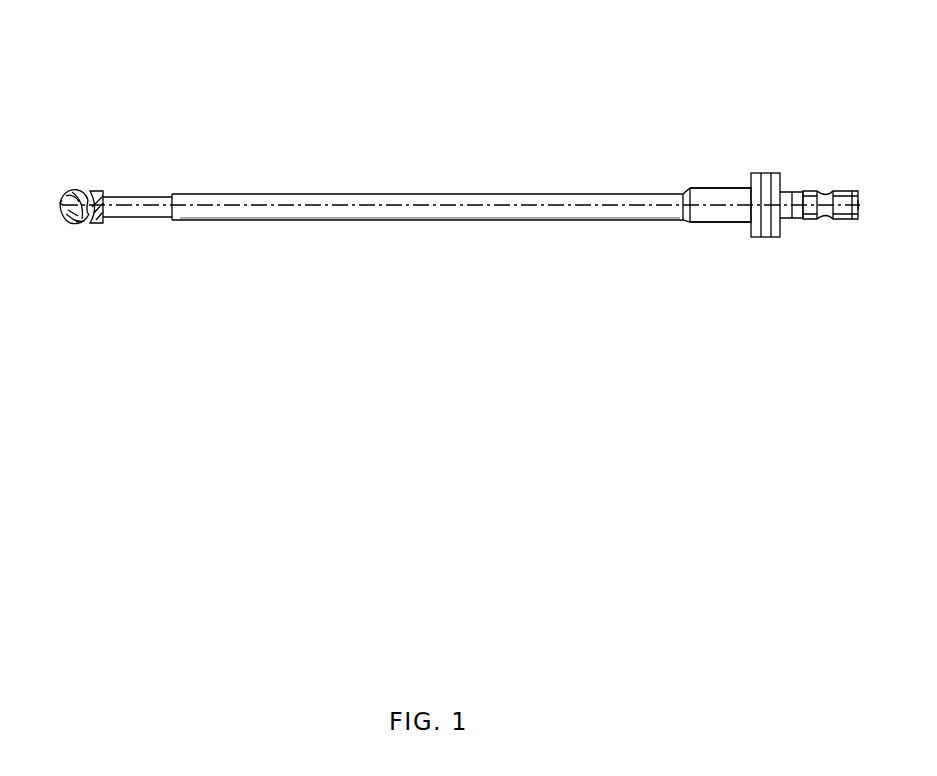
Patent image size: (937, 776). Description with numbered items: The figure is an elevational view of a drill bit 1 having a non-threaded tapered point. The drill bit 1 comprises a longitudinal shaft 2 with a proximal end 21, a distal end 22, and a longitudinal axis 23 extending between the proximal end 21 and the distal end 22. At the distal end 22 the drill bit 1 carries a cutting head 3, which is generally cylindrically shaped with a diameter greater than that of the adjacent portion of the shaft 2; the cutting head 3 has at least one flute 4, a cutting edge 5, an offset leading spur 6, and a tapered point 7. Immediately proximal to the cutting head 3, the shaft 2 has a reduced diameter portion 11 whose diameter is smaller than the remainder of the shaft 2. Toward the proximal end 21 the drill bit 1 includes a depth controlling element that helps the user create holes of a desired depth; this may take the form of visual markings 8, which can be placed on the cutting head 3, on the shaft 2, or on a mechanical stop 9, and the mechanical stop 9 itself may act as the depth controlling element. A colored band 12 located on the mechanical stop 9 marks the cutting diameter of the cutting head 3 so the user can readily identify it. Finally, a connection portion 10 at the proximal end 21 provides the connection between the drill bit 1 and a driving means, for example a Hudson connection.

The drill bit 1 is at (516, 127).
The longitudinal shaft 2 is at (559, 253).
The cutting head 3 is at (82, 185).
The flute 4 is at (82, 222).
The cutting edge 5 is at (66, 216).
The offset leading spur 6 is at (62, 222).
The tapered point 7 is at (63, 207).
The visual markings 8 is at (95, 223).
The mechanical stop 9 is at (729, 245).
The connection portion 10 is at (840, 220).
The reduced diameter portion 11 is at (162, 217).
The colored band 12 is at (767, 172).
The proximal end 21 is at (849, 136).
The distal end 22 is at (123, 170).
The longitudinal axis 23 is at (860, 203).